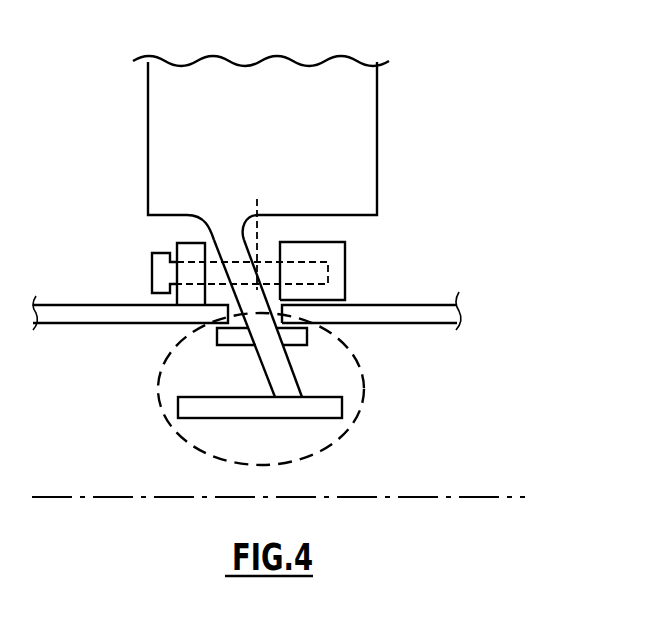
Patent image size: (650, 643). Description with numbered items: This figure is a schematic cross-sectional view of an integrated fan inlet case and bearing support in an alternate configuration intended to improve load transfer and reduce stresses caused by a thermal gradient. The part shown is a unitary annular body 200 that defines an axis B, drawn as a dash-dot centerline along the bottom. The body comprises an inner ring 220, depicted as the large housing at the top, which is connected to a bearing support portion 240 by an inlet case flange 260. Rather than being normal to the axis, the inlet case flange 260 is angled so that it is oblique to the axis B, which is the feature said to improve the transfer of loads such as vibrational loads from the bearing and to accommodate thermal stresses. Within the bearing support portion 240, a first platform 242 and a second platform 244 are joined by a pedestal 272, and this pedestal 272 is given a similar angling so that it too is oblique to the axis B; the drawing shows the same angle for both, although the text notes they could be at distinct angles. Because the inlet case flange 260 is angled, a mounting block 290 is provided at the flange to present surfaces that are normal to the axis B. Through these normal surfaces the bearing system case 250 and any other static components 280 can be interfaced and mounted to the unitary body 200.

The unitary annular body 200 is at (424, 148).
The inner ring 220 is at (352, 195).
The bearing support portion 240 is at (357, 353).
The first platform 242 is at (303, 346).
The second platform 244 is at (328, 408).
The bearing system case 250 is at (103, 308).
The inlet case flange 260 is at (287, 299).
The pedestal 272 is at (273, 363).
The static components 280 is at (432, 310).
The mounting block 290 is at (257, 199).
The axis B is at (462, 497).